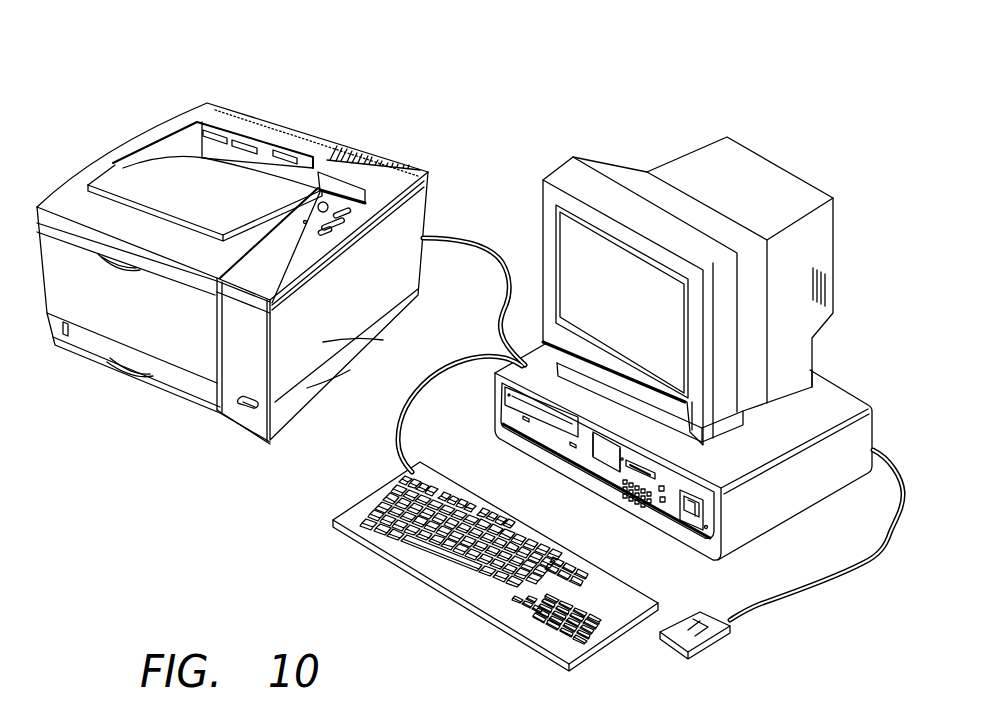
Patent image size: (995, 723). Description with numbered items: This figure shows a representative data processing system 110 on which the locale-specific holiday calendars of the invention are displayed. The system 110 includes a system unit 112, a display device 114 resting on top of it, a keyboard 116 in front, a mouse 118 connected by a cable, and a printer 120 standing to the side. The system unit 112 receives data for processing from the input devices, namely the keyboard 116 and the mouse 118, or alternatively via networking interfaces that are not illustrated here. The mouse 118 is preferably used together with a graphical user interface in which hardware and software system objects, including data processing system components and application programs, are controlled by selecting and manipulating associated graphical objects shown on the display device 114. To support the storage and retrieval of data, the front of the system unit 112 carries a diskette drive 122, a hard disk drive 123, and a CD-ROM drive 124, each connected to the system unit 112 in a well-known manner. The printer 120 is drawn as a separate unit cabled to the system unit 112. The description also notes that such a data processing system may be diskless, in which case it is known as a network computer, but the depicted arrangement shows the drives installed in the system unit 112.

The computer system 110 is at (451, 88).
The system unit 112 is at (850, 388).
The display device 114 is at (768, 160).
The keyboard 116 is at (310, 527).
The mouse 118 is at (707, 647).
The printer 120 is at (117, 404).
The diskette drive 122 is at (642, 472).
The hard disk drive 123 is at (603, 463).
The CD-ROM drive 124 is at (553, 418).